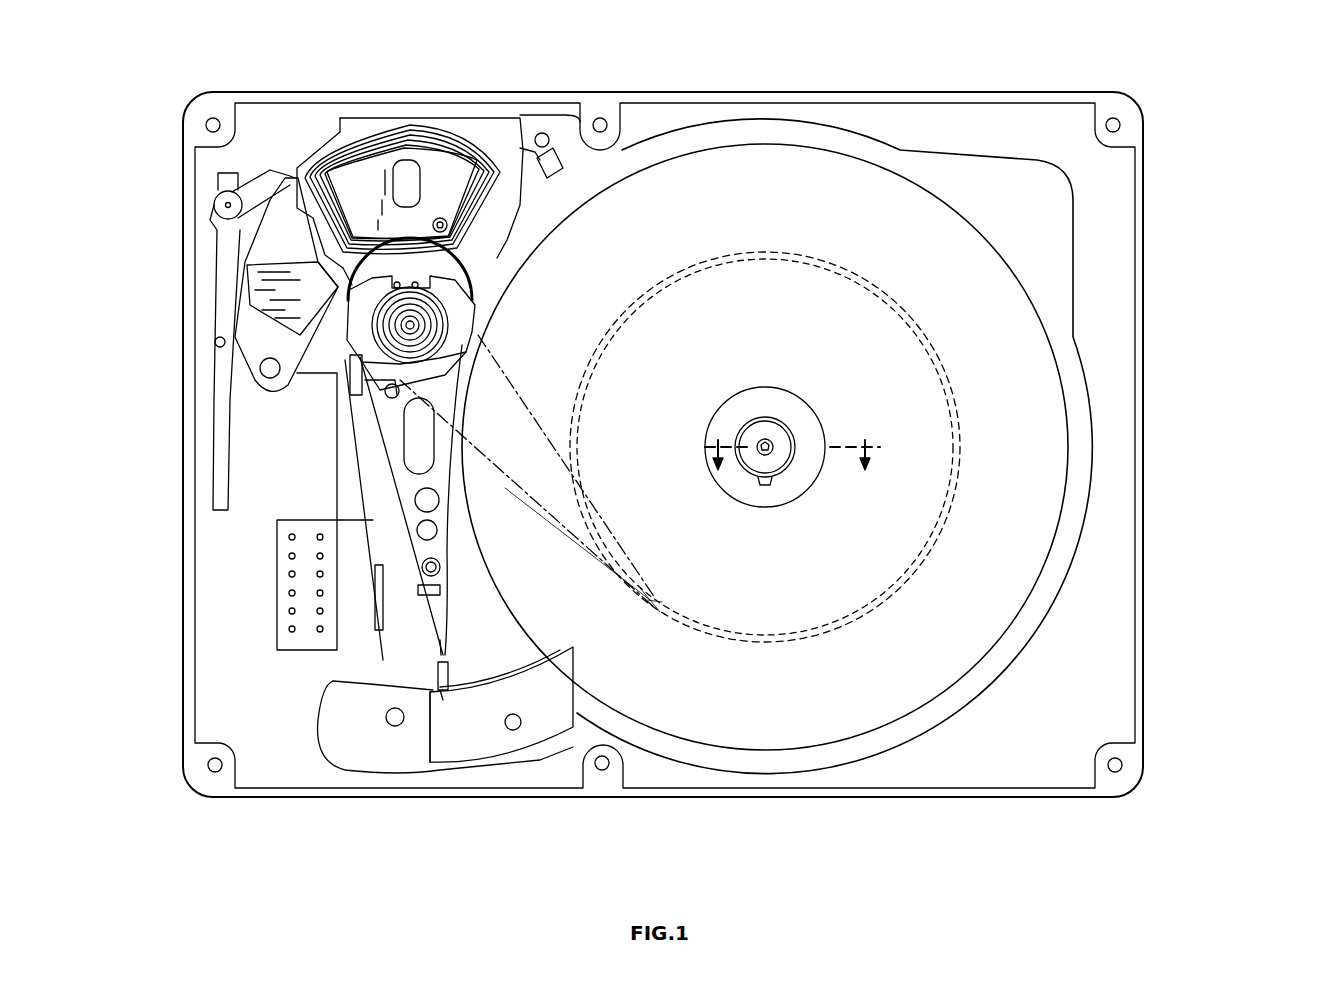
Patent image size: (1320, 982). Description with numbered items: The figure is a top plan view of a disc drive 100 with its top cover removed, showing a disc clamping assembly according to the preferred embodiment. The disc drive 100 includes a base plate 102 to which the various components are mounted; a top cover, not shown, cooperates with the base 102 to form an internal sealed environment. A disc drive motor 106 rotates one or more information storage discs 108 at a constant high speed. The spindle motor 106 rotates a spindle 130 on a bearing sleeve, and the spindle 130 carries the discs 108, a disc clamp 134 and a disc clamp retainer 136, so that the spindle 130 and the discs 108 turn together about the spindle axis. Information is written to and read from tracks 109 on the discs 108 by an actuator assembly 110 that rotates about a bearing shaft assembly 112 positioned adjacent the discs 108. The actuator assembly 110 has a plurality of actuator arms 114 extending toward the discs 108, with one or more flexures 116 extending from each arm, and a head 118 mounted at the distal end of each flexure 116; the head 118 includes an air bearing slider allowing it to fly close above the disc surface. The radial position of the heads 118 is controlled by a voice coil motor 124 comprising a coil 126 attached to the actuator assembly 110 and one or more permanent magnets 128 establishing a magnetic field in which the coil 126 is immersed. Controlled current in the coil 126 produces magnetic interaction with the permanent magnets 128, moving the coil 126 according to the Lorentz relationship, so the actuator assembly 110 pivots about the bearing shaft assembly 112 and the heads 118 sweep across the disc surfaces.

The disc drive 100 is at (1062, 815).
The base plate 102 is at (1143, 374).
The disc drive motor 106 is at (794, 421).
The information storage disc 108 is at (860, 170).
The tracks 109 is at (722, 647).
The actuator assembly 110 is at (506, 469).
The bearing shaft assembly 112 is at (415, 326).
The actuator arms 114 is at (590, 465).
The flexures 116 is at (455, 607).
The head 118 is at (450, 692).
The voice coil motor 124 is at (372, 140).
The coil 126 is at (437, 142).
The permanent magnets 128 is at (255, 295).
The spindle 130 is at (770, 445).
The disc clamp 134 is at (725, 410).
The disc clamp retainer 136 is at (780, 418).